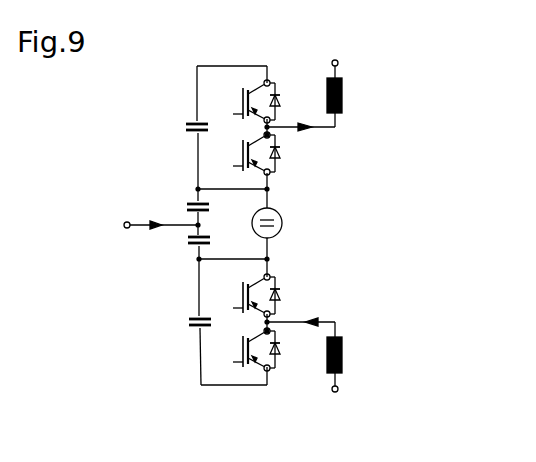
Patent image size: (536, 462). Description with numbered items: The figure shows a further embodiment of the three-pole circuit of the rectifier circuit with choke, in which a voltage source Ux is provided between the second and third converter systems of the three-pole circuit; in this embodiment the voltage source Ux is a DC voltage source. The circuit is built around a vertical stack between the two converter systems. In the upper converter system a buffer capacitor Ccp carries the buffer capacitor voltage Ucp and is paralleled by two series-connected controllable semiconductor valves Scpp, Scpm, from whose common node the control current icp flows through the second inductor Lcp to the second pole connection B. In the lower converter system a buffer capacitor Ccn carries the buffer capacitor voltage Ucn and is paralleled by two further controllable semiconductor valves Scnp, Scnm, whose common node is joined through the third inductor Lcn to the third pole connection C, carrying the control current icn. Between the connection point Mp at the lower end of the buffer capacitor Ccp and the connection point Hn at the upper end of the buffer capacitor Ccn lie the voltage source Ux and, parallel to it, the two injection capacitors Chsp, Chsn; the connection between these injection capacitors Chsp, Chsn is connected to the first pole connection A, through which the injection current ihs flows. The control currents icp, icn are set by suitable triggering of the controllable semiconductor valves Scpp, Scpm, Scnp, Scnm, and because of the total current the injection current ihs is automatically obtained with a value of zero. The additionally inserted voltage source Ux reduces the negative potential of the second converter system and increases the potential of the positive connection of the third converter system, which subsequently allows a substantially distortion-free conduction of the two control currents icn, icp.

The buffer capacitor Ccp is at (184, 117).
The buffer capacitor Ccn is at (188, 311).
The injection capacitor Chsp is at (177, 203).
The injection capacitor Chsn is at (183, 242).
The controllable semiconductor valve Scpp is at (242, 101).
The controllable semiconductor valve Scpm is at (242, 153).
The controllable semiconductor valve Scnp is at (242, 295).
The controllable semiconductor valve Scnm is at (242, 349).
The voltage source Ux is at (292, 200).
The buffer capacitor voltage Ucp is at (152, 88).
The buffer capacitor voltage Ucn is at (156, 290).
The first pole connection A is at (149, 230).
The second pole connection B is at (343, 46).
The third pole connection C is at (342, 409).
The second inductor Lcp is at (317, 95).
The third inductor Lcn is at (317, 355).
The connection point Mp is at (175, 189).
The connection point Hn is at (175, 272).
The injection current ihs is at (137, 240).
The control current icp is at (308, 149).
The control current icn is at (304, 299).